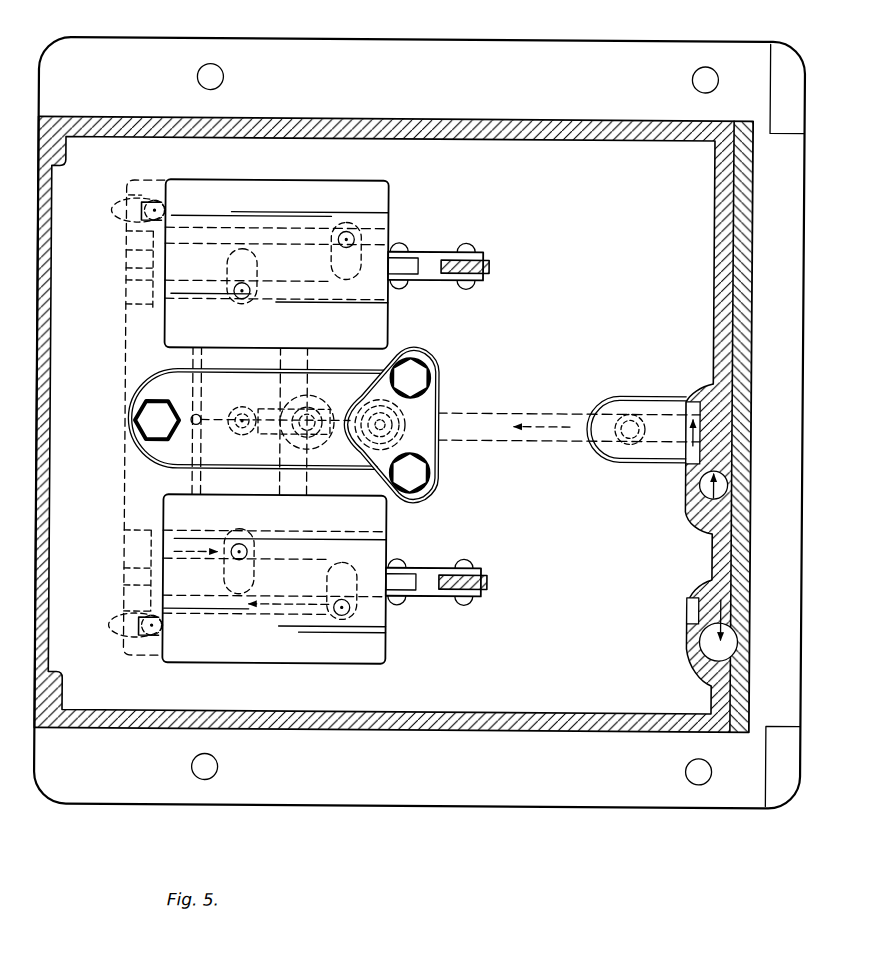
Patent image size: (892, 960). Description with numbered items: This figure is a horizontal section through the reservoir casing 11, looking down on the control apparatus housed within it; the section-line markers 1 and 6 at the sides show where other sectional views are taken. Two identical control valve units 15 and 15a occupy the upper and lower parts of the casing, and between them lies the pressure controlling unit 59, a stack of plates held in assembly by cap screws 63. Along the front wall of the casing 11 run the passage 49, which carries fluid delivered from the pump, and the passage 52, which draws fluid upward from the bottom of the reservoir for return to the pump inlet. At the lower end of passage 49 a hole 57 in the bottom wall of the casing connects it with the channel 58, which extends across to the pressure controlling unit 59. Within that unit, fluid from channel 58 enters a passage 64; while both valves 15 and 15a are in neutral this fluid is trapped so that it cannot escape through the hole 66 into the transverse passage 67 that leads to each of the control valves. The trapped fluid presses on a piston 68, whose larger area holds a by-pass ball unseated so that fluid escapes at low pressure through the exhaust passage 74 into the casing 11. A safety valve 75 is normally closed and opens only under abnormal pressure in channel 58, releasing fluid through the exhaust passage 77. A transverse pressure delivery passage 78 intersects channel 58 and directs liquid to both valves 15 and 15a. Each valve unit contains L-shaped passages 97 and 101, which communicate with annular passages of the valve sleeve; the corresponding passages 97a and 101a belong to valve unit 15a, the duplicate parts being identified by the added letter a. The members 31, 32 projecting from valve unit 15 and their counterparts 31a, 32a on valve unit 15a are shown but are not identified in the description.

The section line 1- 1 is at (97, 822).
The section line 6- 6 is at (122, 421).
The reservoir casing 11 is at (612, 66).
The control valve unit 15 is at (160, 508).
The control valve unit 15a is at (165, 180).
The lower latch bolt 31 is at (490, 582).
The upper latch bolt 31a is at (490, 267).
The lower latch bar 32 is at (432, 572).
The upper latch bar 32a is at (432, 256).
The passage 49 is at (665, 422).
The passage 52 is at (700, 655).
The hole 57 is at (624, 406).
The channel 58 is at (540, 412).
The pressure controlling unit 59 is at (165, 372).
The cap screws 63 is at (150, 438).
The passage 64 is at (242, 410).
The hole 66 is at (194, 416).
The transverse passage 67 is at (203, 358).
The piston 68 is at (290, 406).
The exhaust passage 74 is at (323, 407).
The safety valve 75 is at (410, 423).
The exhaust passage 77 is at (340, 407).
The transverse pressure delivery passage 78 is at (276, 362).
The L-shaped passage 97 is at (236, 546).
The L-shaped passage 97a is at (241, 300).
The L-shaped passage 101 is at (262, 612).
The L-shaped passage 101a is at (311, 238).